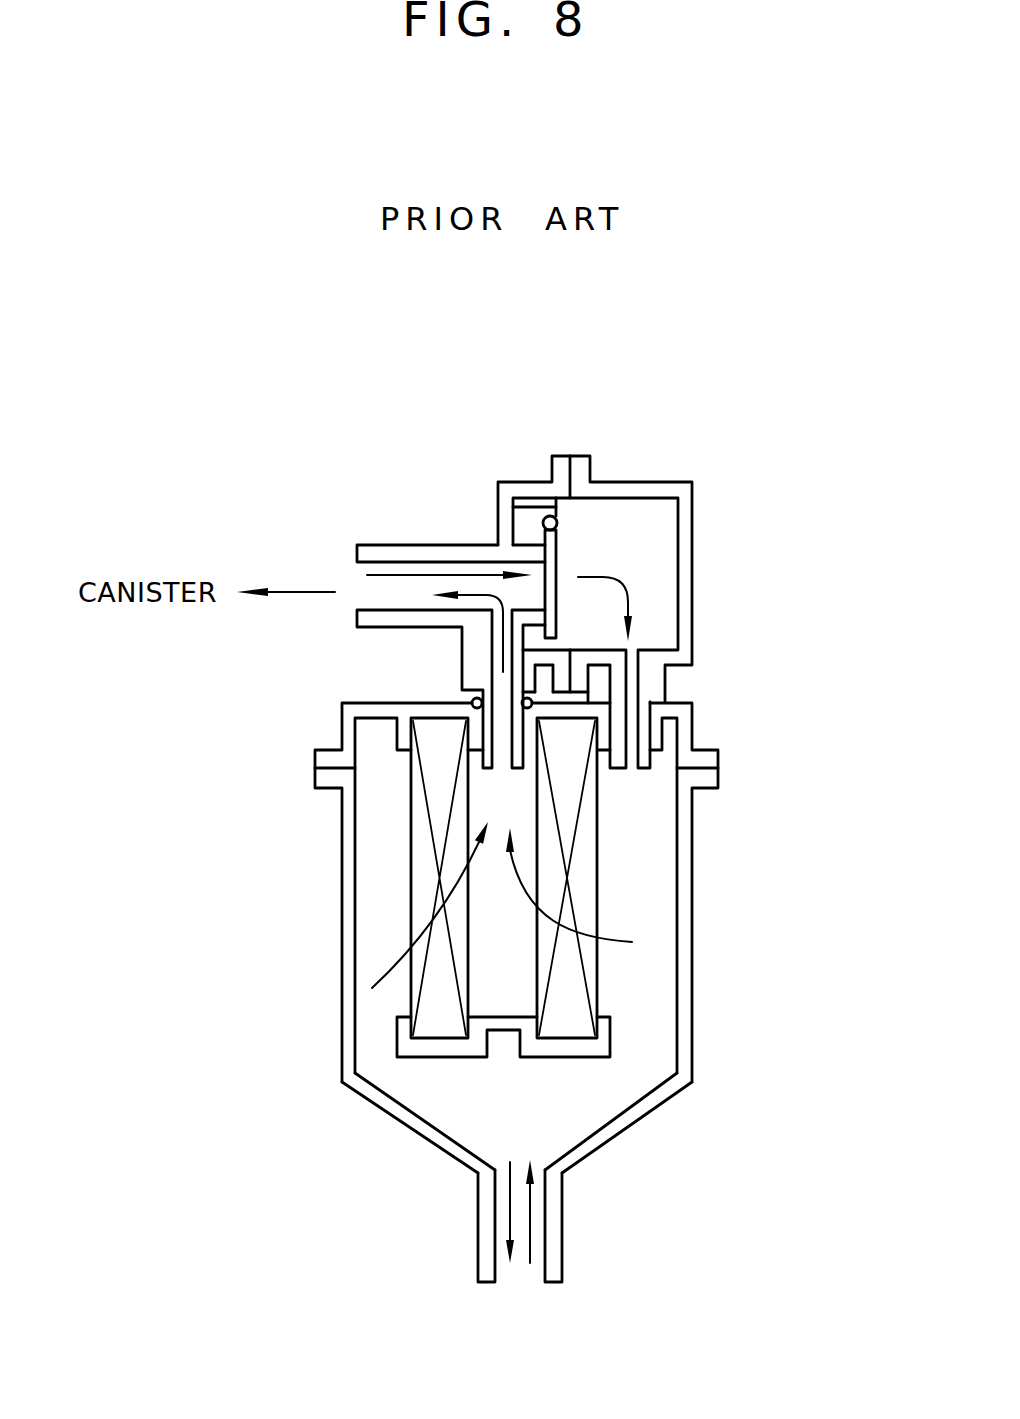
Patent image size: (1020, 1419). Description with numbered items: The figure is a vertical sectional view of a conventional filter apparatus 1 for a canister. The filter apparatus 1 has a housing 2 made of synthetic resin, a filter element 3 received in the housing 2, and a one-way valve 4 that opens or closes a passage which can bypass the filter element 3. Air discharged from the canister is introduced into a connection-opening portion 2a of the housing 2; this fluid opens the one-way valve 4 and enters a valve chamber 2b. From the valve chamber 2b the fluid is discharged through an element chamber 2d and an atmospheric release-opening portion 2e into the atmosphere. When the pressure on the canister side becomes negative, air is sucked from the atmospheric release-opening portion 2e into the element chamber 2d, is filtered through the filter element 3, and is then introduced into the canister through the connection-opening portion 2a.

The filter apparatus 1 is at (828, 545).
The housing 2 is at (350, 1028).
The connection-opening portion 2a is at (418, 553).
The valve chamber 2b is at (633, 523).
The element chamber 2d is at (600, 1097).
The atmospheric release-opening portion 2e is at (530, 1270).
The filter element 3 is at (407, 893).
The one-way valve 4 is at (553, 577).